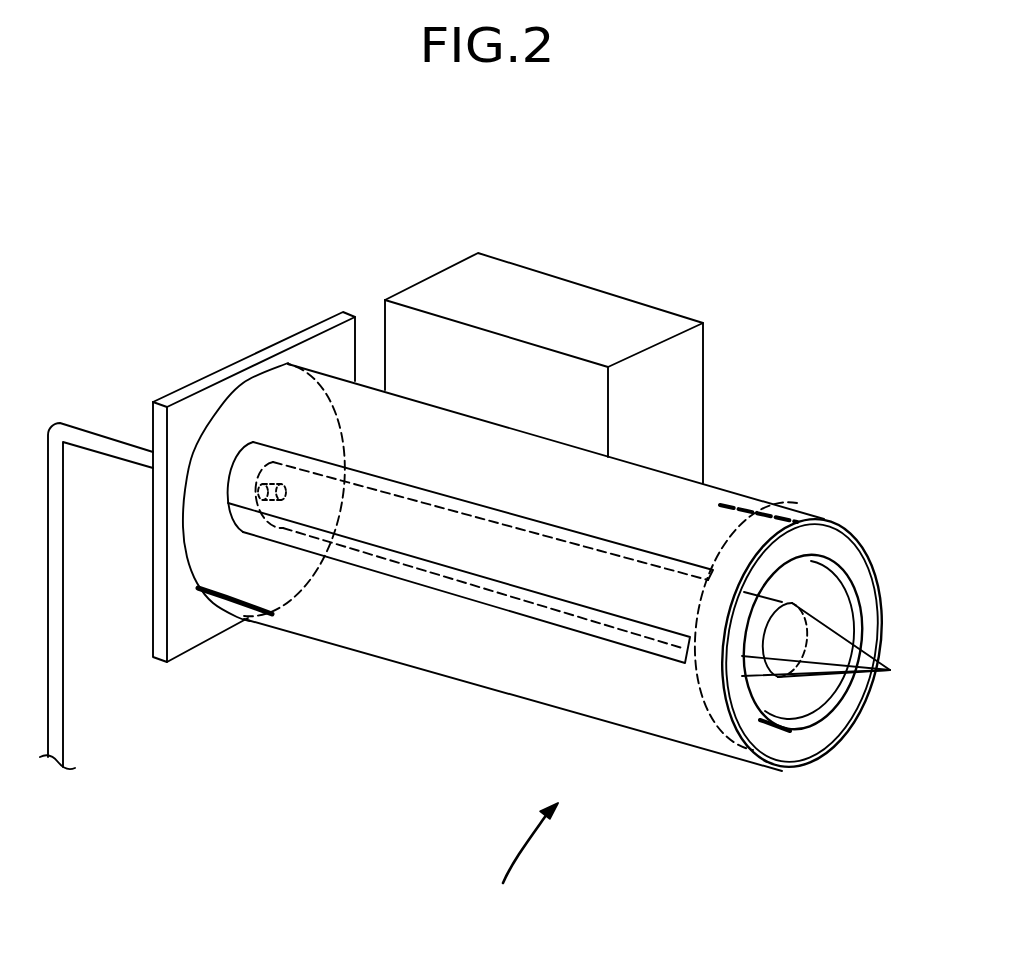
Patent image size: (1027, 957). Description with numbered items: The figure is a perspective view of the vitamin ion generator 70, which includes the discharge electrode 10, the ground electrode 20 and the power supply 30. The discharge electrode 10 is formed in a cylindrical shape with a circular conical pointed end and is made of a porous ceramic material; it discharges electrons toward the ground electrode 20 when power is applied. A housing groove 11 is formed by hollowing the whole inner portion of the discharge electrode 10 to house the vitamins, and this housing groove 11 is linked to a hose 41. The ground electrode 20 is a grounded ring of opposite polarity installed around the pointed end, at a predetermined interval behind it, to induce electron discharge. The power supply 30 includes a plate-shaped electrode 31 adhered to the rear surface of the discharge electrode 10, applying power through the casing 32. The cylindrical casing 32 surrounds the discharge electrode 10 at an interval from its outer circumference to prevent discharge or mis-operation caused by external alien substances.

The discharge electrode 10 is at (835, 635).
The housing groove 11 is at (783, 652).
The ground electrode 20 is at (770, 745).
The power supply 30 is at (655, 318).
The plate-shaped electrode 31 is at (203, 378).
The casing 32 is at (367, 408).
The hose 41 is at (57, 730).
The vitamin ion generator 70 is at (520, 860).